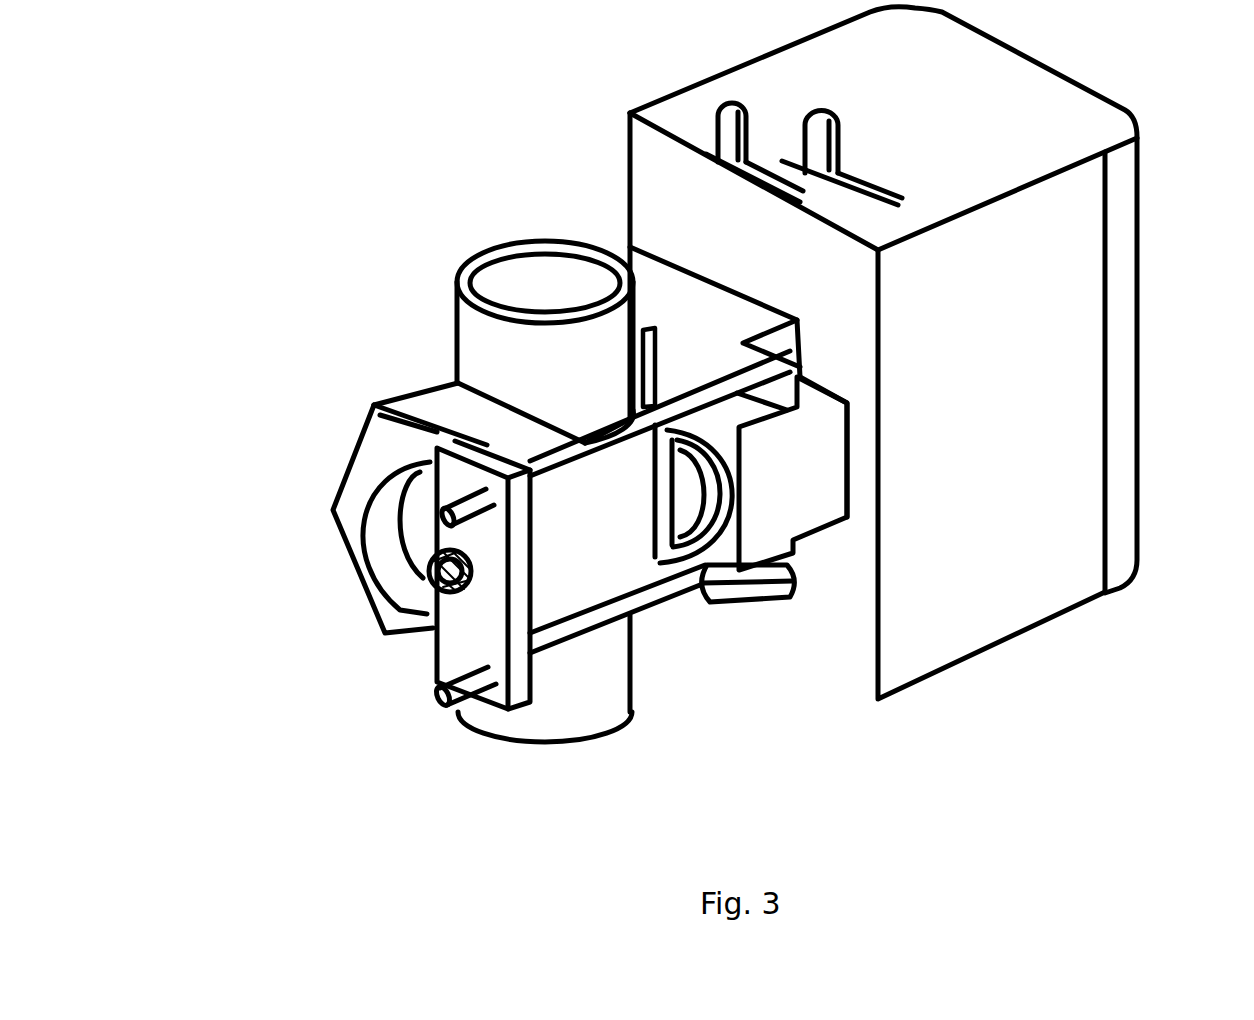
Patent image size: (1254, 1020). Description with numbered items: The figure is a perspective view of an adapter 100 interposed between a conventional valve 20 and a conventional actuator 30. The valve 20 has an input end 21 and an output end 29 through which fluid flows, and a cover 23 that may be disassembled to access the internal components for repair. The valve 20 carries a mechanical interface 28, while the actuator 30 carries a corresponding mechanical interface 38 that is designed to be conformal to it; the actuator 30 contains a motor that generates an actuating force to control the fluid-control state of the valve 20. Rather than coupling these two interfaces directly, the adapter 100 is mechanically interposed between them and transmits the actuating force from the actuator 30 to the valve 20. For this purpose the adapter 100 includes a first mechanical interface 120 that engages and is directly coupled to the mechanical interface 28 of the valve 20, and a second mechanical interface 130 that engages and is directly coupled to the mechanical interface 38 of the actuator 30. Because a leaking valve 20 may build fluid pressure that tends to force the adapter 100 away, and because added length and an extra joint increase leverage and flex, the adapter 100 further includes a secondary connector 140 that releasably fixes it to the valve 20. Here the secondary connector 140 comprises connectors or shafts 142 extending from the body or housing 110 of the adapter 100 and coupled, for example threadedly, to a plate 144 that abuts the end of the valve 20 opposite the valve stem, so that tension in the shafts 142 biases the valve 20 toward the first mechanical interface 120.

The valve 20 is at (290, 355).
The input end 21 is at (500, 742).
The cover 23 is at (355, 517).
The mechanical interface 28 is at (667, 373).
The output end 29 is at (533, 285).
The actuator 30 is at (1105, 628).
The mechanical interface 38 is at (640, 227).
The adapter 100 is at (693, 626).
The body or housing 110 is at (797, 509).
The first mechanical interface 120 is at (720, 545).
The second mechanical interface 130 is at (851, 432).
The secondary connector 140 is at (588, 666).
The connectors or shafts 142 is at (645, 612).
The plate 144 is at (480, 620).